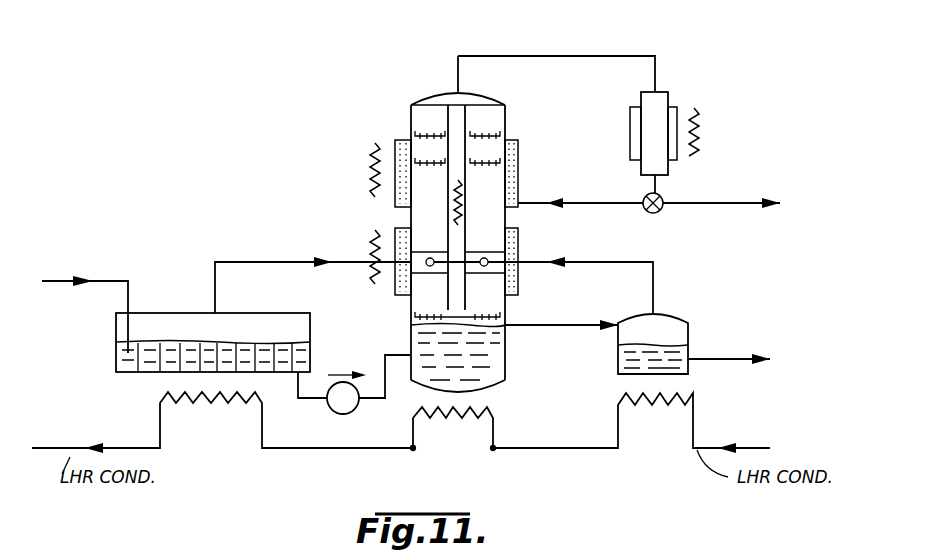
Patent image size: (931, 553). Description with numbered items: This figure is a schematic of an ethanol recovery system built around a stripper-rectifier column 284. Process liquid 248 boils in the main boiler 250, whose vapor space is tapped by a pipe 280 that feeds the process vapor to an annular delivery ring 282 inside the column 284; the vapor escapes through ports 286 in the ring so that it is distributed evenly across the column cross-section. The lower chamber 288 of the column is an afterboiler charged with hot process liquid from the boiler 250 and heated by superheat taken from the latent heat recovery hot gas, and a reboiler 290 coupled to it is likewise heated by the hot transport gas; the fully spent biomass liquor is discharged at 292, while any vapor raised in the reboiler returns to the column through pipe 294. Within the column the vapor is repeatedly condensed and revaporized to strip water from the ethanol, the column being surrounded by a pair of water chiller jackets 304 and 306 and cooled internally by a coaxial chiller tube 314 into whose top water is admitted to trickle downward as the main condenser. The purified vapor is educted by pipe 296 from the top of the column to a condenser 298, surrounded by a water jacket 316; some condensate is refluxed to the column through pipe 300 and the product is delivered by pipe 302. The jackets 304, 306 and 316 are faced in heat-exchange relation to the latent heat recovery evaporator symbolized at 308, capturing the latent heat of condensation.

The liquid 248 is at (118, 361).
The boiler 250 is at (282, 313).
The pipe 280 is at (217, 260).
The annular delivery ring 282 is at (507, 248).
The stripper-rectifier column 284 is at (505, 110).
The ports 286 is at (428, 267).
The lower chamber 288 is at (411, 350).
The reboiler 290 is at (682, 318).
The discharge 292 is at (740, 359).
The pipe 294 is at (590, 262).
The pipe 296 is at (546, 56).
The condenser 298 is at (641, 92).
The pipe 300 is at (562, 203).
The pipe 302 is at (730, 203).
The water chiller jacket 304 is at (518, 146).
The water chiller jacket 306 is at (518, 288).
The LHR EVAP 308 is at (454, 210).
The coaxial chiller tube 314 is at (466, 196).
The water jacket 316 is at (677, 112).